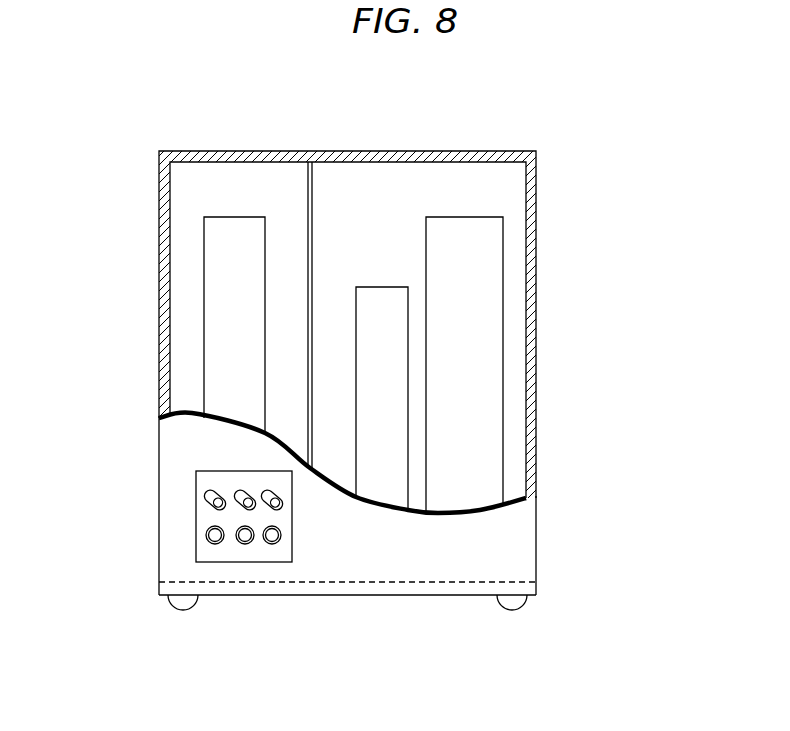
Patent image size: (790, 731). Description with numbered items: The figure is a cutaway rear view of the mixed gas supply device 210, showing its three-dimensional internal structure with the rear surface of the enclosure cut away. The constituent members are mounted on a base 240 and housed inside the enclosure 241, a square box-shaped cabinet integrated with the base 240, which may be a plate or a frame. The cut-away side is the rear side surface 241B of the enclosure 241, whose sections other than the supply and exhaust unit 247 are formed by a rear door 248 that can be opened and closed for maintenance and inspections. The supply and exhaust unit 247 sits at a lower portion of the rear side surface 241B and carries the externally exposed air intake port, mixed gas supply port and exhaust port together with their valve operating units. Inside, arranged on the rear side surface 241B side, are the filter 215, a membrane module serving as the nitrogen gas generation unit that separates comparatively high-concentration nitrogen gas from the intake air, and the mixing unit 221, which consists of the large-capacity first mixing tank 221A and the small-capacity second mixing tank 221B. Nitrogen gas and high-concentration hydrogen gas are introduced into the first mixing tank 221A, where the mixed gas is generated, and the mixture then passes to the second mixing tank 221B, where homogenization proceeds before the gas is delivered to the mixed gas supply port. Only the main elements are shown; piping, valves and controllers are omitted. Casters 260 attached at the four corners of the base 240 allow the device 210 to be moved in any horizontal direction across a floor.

The mixed gas supply device 210 is at (573, 133).
The enclosure 241 is at (421, 150).
The rear side surface 241B is at (185, 456).
The filter 215 is at (224, 278).
The mixing unit 221 is at (660, 350).
The first mixing tank 221A is at (465, 367).
The second mixing tank 221B is at (380, 410).
The rear door 248 is at (518, 533).
The supply and exhaust unit 247 is at (203, 517).
The base 240 is at (340, 597).
The casters 260 is at (182, 608).